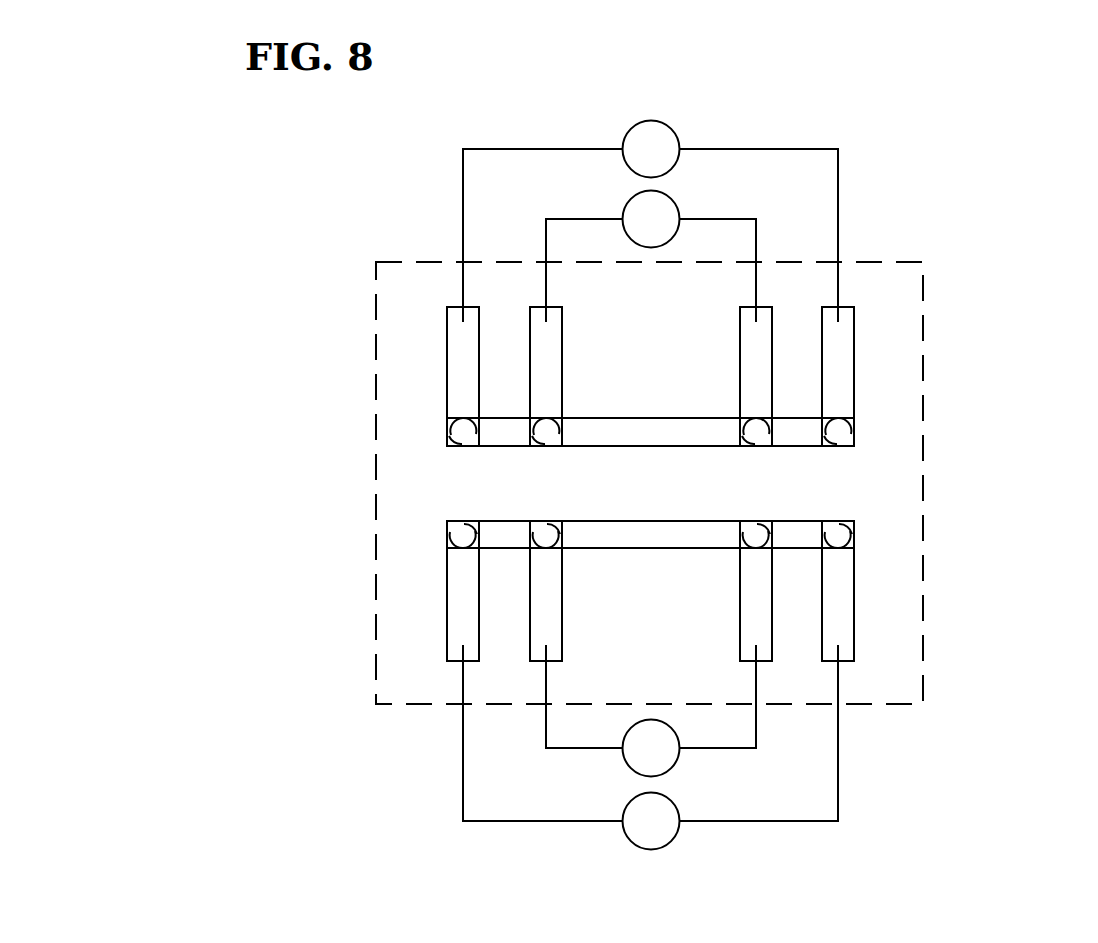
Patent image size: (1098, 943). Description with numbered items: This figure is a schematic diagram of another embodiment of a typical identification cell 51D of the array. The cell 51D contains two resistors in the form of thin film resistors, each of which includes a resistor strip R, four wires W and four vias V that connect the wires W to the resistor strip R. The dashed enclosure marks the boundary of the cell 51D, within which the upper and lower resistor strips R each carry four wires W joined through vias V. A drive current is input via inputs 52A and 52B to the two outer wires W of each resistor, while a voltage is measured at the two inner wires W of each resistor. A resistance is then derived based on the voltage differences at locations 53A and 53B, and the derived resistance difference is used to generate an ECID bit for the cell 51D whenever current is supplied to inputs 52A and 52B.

The cell 51D is at (719, 453).
The input 52A is at (650, 195).
The input 52B is at (650, 773).
The location 53A is at (663, 241).
The location 53B is at (667, 725).
The wire W is at (650, 477).
The resistor strip R is at (650, 456).
The via V is at (650, 446).